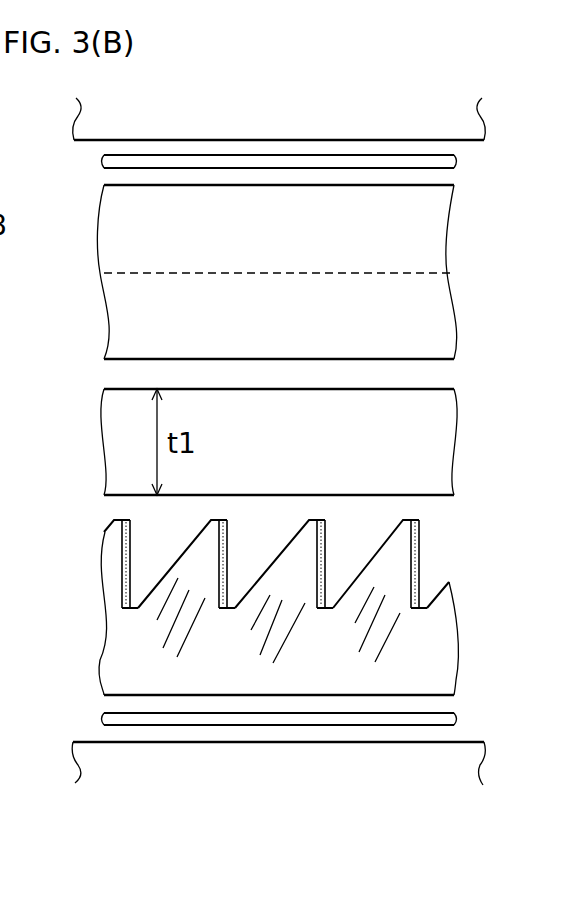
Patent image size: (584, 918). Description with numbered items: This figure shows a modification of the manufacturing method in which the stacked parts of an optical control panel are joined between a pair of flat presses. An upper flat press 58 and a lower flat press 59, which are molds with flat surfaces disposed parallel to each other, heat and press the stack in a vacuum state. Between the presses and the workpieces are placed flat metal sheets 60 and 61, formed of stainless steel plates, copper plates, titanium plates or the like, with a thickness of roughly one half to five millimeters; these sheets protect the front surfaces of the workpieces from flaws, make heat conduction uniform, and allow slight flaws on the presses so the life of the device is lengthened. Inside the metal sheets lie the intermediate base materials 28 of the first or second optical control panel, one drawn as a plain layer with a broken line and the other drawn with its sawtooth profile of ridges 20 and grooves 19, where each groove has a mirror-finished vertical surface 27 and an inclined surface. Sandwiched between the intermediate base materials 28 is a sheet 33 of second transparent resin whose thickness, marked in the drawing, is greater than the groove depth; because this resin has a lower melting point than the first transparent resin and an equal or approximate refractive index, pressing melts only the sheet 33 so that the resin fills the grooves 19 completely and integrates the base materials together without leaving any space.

The flat press 58 is at (486, 121).
The flat press 59 is at (455, 766).
The flat metal sheet 60 is at (270, 165).
The flat metal sheet 61 is at (314, 718).
The intermediate base material 28 is at (462, 221).
The sheet of second transparent resin 33 is at (297, 415).
The ridge 20 is at (207, 550).
The groove 19 is at (347, 547).
The vertical reflective surface 27 is at (322, 577).